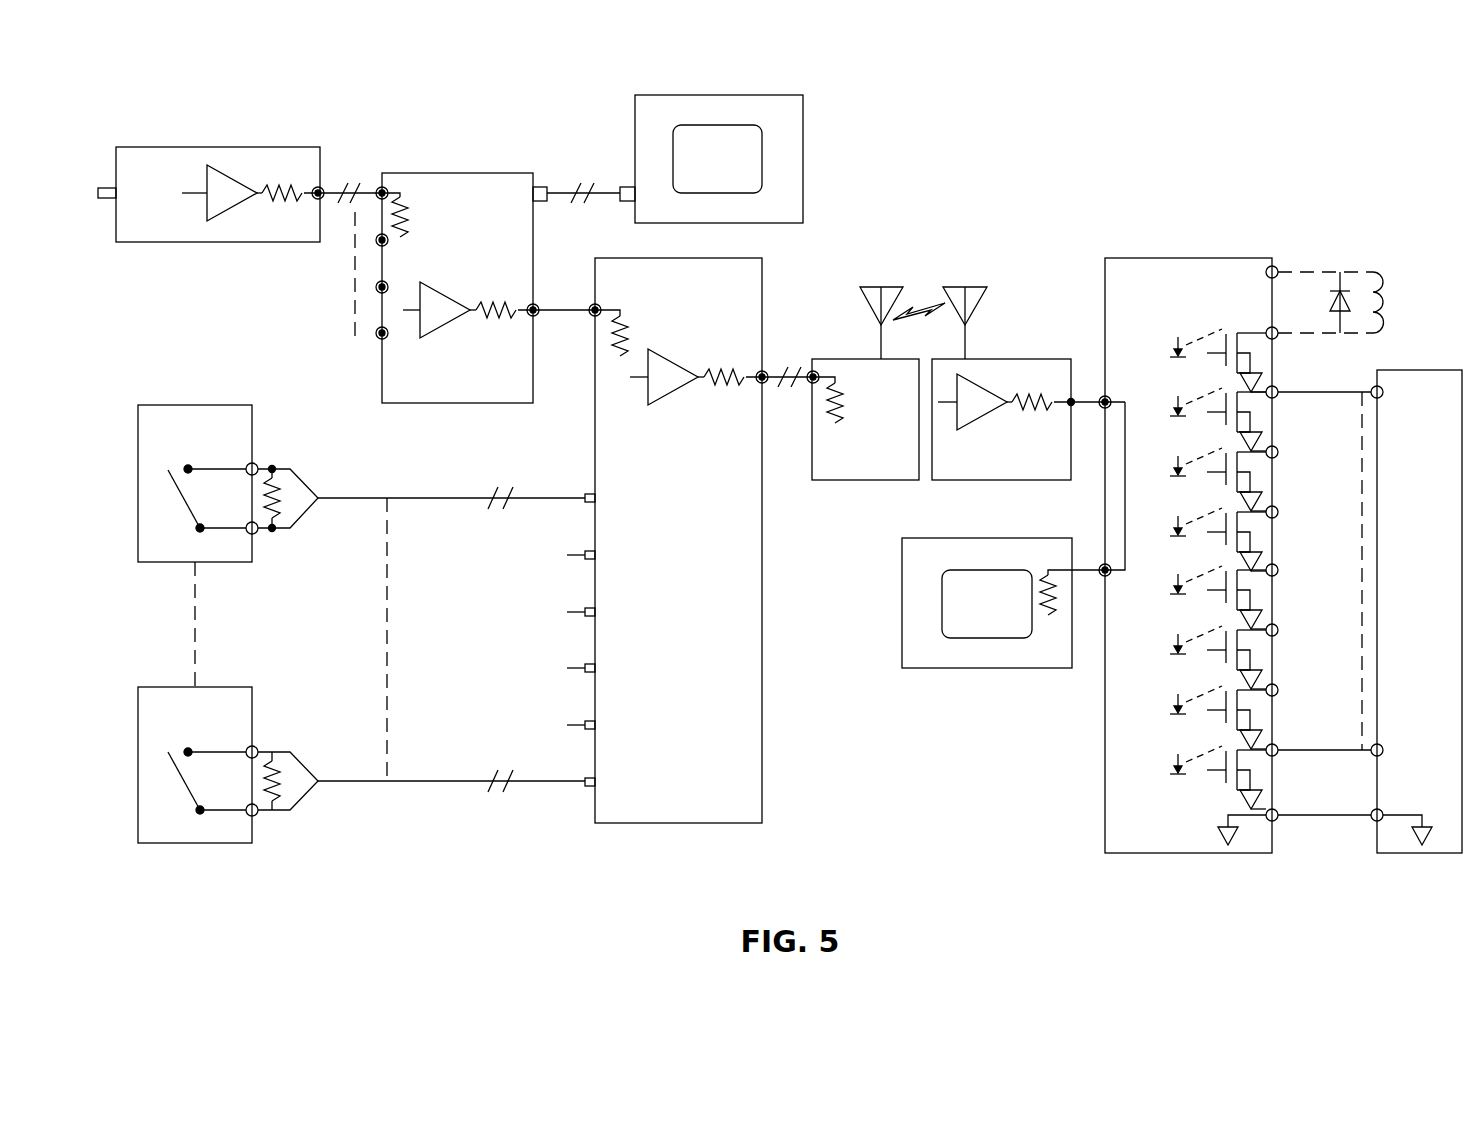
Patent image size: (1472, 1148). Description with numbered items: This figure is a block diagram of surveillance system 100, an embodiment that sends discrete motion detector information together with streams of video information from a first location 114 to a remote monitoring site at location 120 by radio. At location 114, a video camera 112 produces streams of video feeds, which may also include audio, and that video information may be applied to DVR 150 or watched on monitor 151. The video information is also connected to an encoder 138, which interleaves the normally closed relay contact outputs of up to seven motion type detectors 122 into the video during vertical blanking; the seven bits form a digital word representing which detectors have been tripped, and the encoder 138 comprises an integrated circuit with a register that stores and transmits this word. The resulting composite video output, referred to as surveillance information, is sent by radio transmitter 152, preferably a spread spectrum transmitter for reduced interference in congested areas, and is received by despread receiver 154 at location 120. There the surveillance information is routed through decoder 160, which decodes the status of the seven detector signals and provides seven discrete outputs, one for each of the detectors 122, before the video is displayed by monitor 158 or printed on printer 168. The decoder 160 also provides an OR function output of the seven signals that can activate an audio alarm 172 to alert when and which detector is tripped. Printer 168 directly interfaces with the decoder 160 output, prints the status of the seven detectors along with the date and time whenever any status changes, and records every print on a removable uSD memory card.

The surveillance system 100 is at (1154, 112).
The video camera 112 is at (178, 147).
The location 114 is at (362, 846).
The location 120 is at (1168, 886).
The detector 122 is at (252, 545).
The encoder 138 is at (762, 290).
The DVR 150 is at (447, 173).
The monitor 151 is at (803, 160).
The radio transmitter 152 is at (866, 480).
The despread receiver 154 is at (1020, 359).
The monitor 158 is at (987, 668).
The decoder 160 is at (1190, 258).
The printer 168 is at (1398, 853).
The audio alarm 172 is at (1355, 272).